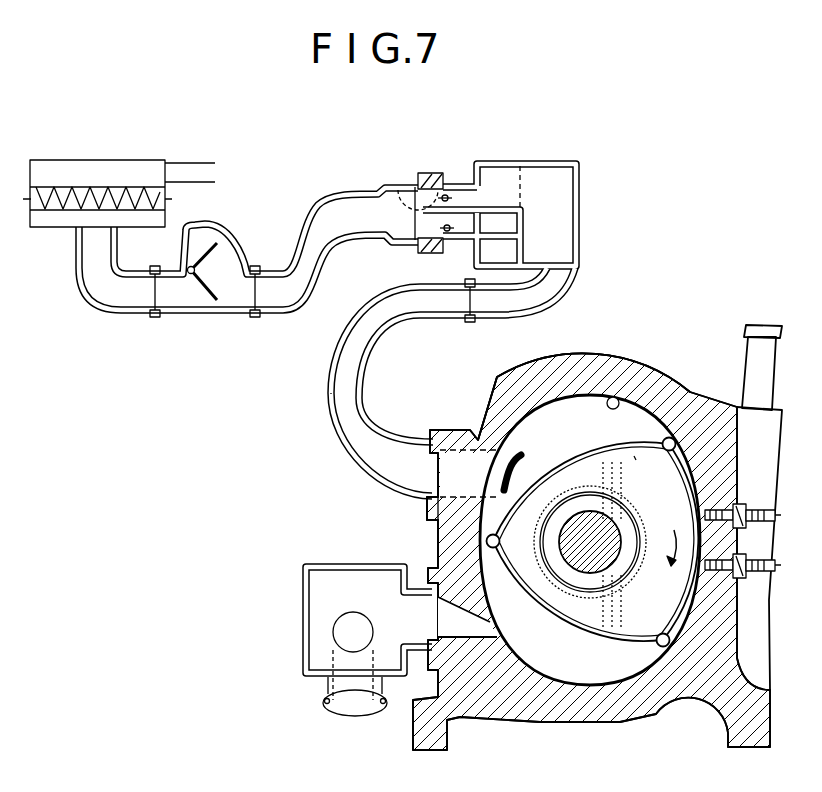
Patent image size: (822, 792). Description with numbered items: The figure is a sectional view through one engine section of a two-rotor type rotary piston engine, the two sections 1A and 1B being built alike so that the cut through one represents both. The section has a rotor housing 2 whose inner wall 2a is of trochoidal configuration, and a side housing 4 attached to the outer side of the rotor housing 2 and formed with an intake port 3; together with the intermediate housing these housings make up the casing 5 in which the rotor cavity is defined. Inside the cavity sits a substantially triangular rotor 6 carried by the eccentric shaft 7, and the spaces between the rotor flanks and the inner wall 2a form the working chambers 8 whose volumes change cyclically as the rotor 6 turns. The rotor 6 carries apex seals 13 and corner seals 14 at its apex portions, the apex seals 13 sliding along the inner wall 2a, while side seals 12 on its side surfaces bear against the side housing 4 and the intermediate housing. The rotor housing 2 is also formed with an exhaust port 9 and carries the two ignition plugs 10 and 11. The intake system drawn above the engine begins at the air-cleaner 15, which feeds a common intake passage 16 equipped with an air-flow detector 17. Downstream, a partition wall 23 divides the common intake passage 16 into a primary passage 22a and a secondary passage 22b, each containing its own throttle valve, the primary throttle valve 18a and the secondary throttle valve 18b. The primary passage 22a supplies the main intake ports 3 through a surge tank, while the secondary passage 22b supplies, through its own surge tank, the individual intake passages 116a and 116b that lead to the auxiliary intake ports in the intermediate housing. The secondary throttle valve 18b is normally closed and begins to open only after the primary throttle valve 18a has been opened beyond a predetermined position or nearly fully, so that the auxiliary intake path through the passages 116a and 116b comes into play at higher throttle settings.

The engine section 1A is at (671, 328).
The engine section 1B is at (591, 551).
The rotor housing 2 is at (603, 352).
The inner wall 2a is at (619, 397).
The intake port 3 is at (521, 457).
The side housing 4 is at (473, 422).
The casing 5 is at (480, 385).
The rotor 6 is at (573, 455).
The eccentric shaft 7 is at (595, 572).
The working chamber 8 is at (562, 658).
The exhaust port 9 is at (492, 628).
The ignition plug 10 is at (753, 574).
The ignition plug 11 is at (758, 508).
The side seal 12 is at (628, 440).
The apex seal 13 is at (434, 526).
The corner seal 14 is at (666, 452).
The air-cleaner 15 is at (117, 160).
The common intake passage 16 is at (258, 290).
The air-flow detector 17 is at (213, 233).
The primary throttle valve 18a is at (453, 246).
The secondary throttle valve 18b is at (453, 185).
The primary passage 22a is at (403, 238).
The secondary passage 22b is at (430, 173).
The partition wall 23 is at (403, 185).
The individual intake passage 116a is at (330, 397).
The individual intake passage 116b is at (388, 382).